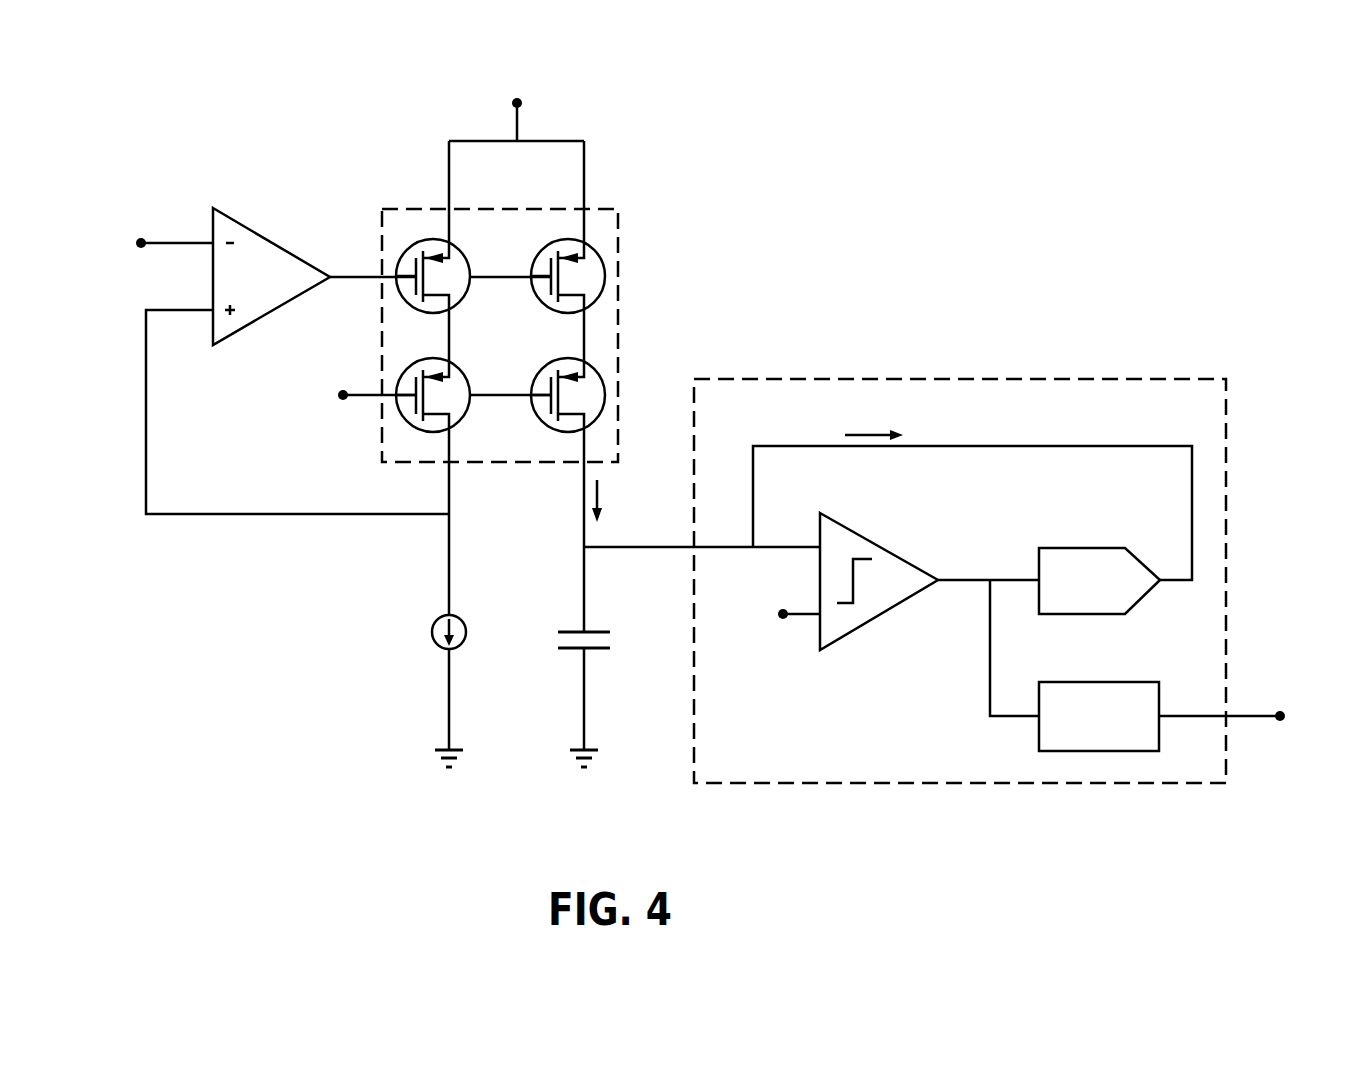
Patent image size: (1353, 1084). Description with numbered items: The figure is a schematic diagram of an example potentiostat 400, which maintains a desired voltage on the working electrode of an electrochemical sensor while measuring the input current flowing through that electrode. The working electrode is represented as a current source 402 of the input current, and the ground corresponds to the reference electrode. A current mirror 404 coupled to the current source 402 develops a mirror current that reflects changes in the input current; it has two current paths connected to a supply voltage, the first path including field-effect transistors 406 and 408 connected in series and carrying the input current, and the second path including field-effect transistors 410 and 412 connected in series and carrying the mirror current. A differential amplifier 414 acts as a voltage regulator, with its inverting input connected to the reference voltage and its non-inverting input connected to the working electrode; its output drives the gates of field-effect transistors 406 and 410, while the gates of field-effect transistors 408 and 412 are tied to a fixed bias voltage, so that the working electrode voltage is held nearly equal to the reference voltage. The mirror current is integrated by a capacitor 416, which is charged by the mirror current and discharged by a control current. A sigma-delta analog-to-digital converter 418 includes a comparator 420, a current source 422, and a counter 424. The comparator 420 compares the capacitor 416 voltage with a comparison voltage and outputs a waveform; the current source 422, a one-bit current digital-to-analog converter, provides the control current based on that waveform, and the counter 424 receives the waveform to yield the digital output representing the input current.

The potentiostat 400 is at (190, 766).
The current source 402 is at (466, 632).
The current mirror 404 is at (610, 207).
The field-effect transistor 406 is at (457, 305).
The field-effect transistor 408 is at (457, 424).
The field-effect transistor 410 is at (593, 304).
The field-effect transistor 412 is at (593, 423).
The differential amplifier 414 is at (242, 223).
The capacitor 416 is at (600, 630).
The sigma-delta analog-to-digital converter 418 is at (997, 379).
The comparator 420 is at (840, 523).
The current source 422 is at (1073, 548).
The counter 424 is at (1075, 682).